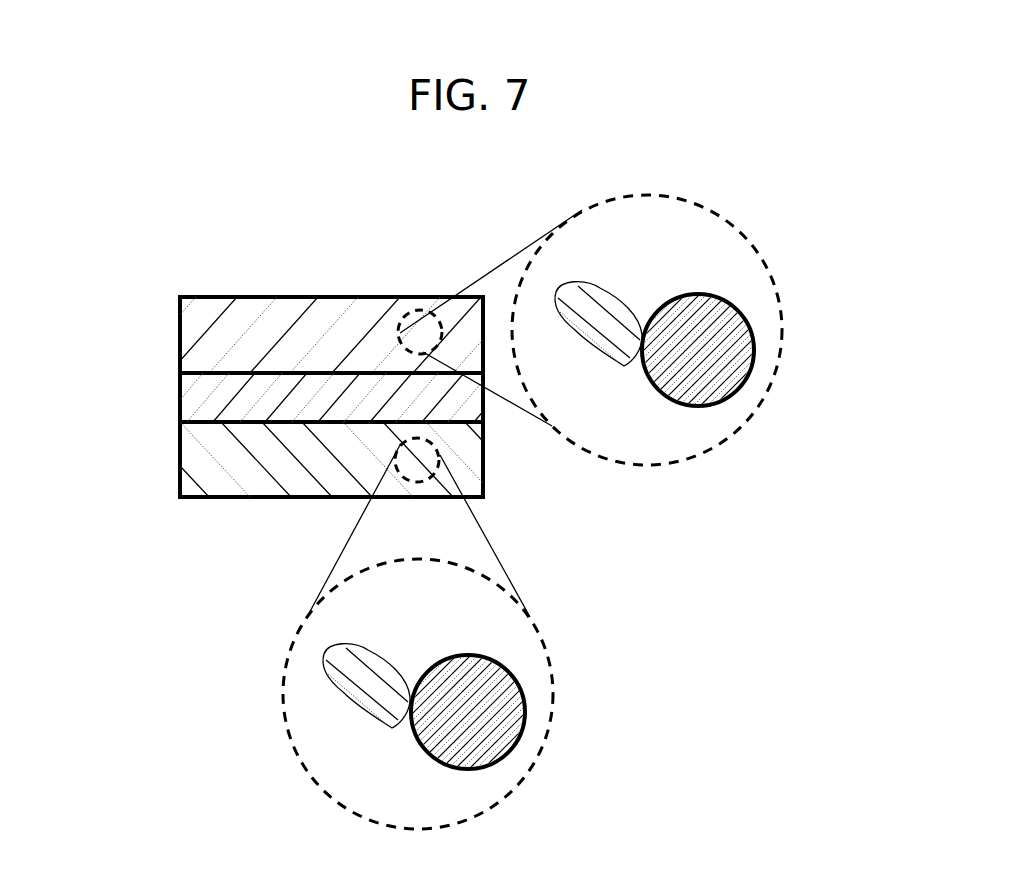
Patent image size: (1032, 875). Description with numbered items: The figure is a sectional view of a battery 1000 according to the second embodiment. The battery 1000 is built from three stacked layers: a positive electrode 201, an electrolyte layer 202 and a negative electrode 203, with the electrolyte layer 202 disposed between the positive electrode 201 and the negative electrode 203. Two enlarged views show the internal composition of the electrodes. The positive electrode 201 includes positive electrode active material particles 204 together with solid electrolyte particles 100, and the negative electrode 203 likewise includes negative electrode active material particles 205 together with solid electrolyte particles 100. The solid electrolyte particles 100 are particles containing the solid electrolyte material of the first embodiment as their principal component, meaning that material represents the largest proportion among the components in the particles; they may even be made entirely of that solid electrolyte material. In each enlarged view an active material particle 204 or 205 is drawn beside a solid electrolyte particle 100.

The battery 1000 is at (375, 241).
The positive electrode 201 is at (212, 321).
The electrolyte layer 202 is at (212, 396).
The negative electrode 203 is at (212, 460).
The positive electrode active material particles 204 is at (717, 349).
The negative electrode active material particles 205 is at (490, 708).
The solid electrolyte particles 100 is at (613, 343).